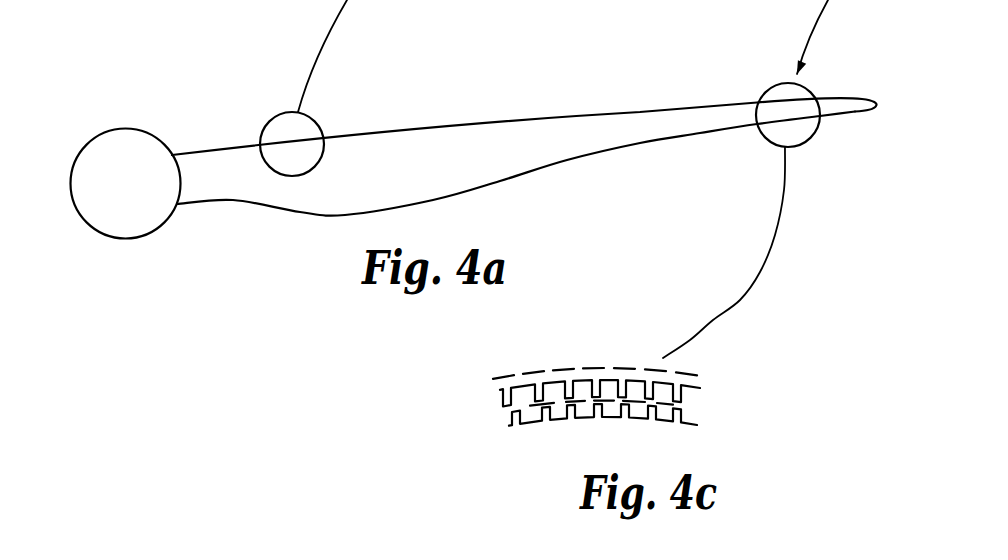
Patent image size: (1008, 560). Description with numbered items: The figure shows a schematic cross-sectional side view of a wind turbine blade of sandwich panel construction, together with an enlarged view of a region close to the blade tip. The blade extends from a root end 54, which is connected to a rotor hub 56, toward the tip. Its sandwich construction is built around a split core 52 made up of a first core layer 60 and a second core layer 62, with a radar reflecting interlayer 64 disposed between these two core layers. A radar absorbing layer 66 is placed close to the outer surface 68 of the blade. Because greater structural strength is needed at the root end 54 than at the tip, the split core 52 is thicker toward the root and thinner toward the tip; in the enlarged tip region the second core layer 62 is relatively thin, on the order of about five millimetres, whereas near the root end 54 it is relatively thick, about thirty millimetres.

In FIG. 4c, the split core 52 is at (626, 389).
In FIG. 4a, the root end 54 is at (524, 183).
In FIG. 4a, the rotor hub 56 is at (100, 213).
In FIG. 4c, the first core layer 60 is at (500, 392).
In FIG. 4c, the second core layer 62 is at (507, 423).
In FIG. 4c, the radar reflecting interlayer 64 is at (688, 403).
In FIG. 4c, the radar absorbing layer 66 is at (568, 368).
In FIG. 4a, the outer surface 68 is at (452, 125).